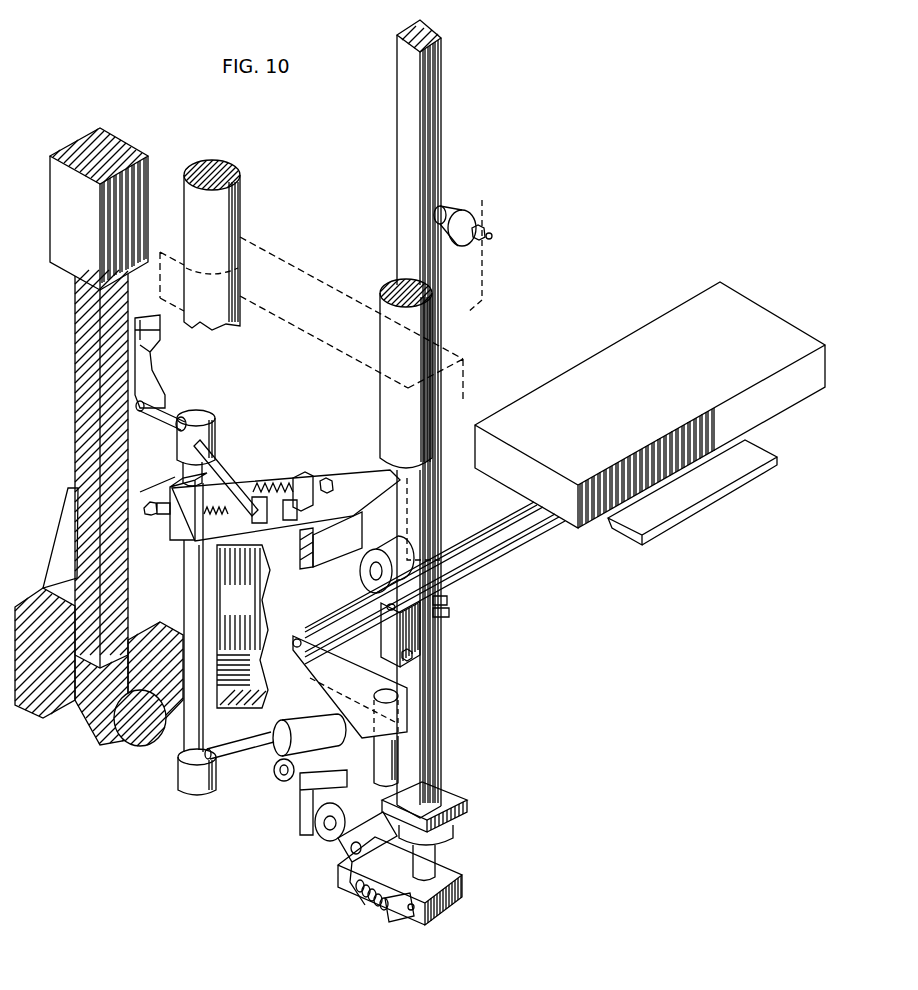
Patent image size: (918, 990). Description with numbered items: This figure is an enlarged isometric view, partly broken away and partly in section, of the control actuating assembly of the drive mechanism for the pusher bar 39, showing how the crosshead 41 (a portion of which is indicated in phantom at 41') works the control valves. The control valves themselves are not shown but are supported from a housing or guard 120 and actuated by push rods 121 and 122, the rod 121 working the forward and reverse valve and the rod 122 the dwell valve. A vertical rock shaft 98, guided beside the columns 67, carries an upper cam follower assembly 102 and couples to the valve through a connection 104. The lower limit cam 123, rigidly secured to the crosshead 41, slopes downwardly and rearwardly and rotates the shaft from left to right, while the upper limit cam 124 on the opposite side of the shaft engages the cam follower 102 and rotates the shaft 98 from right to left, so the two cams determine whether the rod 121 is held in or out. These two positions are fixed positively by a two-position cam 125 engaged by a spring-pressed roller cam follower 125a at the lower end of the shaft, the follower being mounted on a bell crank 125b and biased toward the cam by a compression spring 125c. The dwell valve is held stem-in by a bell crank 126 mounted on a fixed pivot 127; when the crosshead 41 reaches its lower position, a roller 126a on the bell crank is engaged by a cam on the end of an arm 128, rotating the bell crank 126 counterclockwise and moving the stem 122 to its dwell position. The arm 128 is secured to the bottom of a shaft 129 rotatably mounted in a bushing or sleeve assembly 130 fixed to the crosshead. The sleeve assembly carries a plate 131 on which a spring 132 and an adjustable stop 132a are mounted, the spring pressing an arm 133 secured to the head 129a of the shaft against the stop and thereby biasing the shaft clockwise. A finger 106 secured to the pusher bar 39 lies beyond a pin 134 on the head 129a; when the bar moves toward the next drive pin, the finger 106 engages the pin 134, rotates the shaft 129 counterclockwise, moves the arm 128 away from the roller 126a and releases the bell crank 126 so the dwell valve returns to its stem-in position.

The pusher bar 39 is at (78, 330).
The crosshead 41 is at (243, 626).
The phantom frame member 41' is at (311, 318).
The guide column 67 is at (236, 190).
The rock shaft 98 is at (442, 138).
The upper cam follower assembly 102 is at (456, 206).
The connection 104 is at (387, 618).
The finger 106 is at (167, 378).
The housing or guard 120 is at (610, 348).
The push rod 121 is at (497, 552).
The push rod 122 is at (505, 521).
The lower limit cam 123 is at (362, 548).
The upper limit cam 124 is at (468, 314).
The two-position cam 125 is at (298, 826).
The cam follower 125a is at (322, 840).
The bell crank 125b is at (343, 843).
The compression spring 125c is at (374, 897).
The bell crank 126 is at (374, 679).
The roller or cam follower 126a is at (283, 782).
The fixed pivot 127 is at (393, 697).
The arm 128 is at (243, 757).
The shaft 129 is at (184, 760).
The head 129a is at (214, 419).
The bushing or sleeve assembly 130 is at (186, 545).
The plate 131 is at (328, 507).
The spring 132 is at (284, 480).
The adjustable stop 132a is at (207, 505).
The arm 133 is at (212, 472).
The pin 134 is at (152, 412).